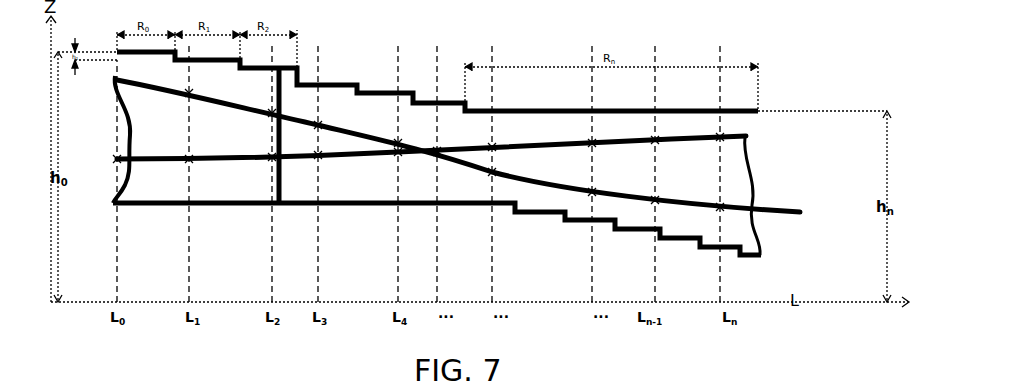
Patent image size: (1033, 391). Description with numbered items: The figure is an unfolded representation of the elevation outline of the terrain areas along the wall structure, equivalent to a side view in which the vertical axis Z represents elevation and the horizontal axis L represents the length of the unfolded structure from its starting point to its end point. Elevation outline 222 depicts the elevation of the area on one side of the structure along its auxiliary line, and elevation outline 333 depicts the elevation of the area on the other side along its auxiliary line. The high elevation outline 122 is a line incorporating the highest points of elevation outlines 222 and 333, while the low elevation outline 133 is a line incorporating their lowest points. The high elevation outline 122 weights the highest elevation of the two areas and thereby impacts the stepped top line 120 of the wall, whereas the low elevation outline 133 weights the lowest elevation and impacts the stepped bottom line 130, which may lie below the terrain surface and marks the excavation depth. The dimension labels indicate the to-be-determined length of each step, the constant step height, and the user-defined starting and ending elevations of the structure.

The top line 120 is at (760, 108).
The bottom line 130 is at (155, 206).
The high elevation outline 122 is at (115, 78).
The elevation outline 222 is at (217, 109).
The elevation outline 333 is at (147, 155).
The low elevation outline 133 is at (250, 164).